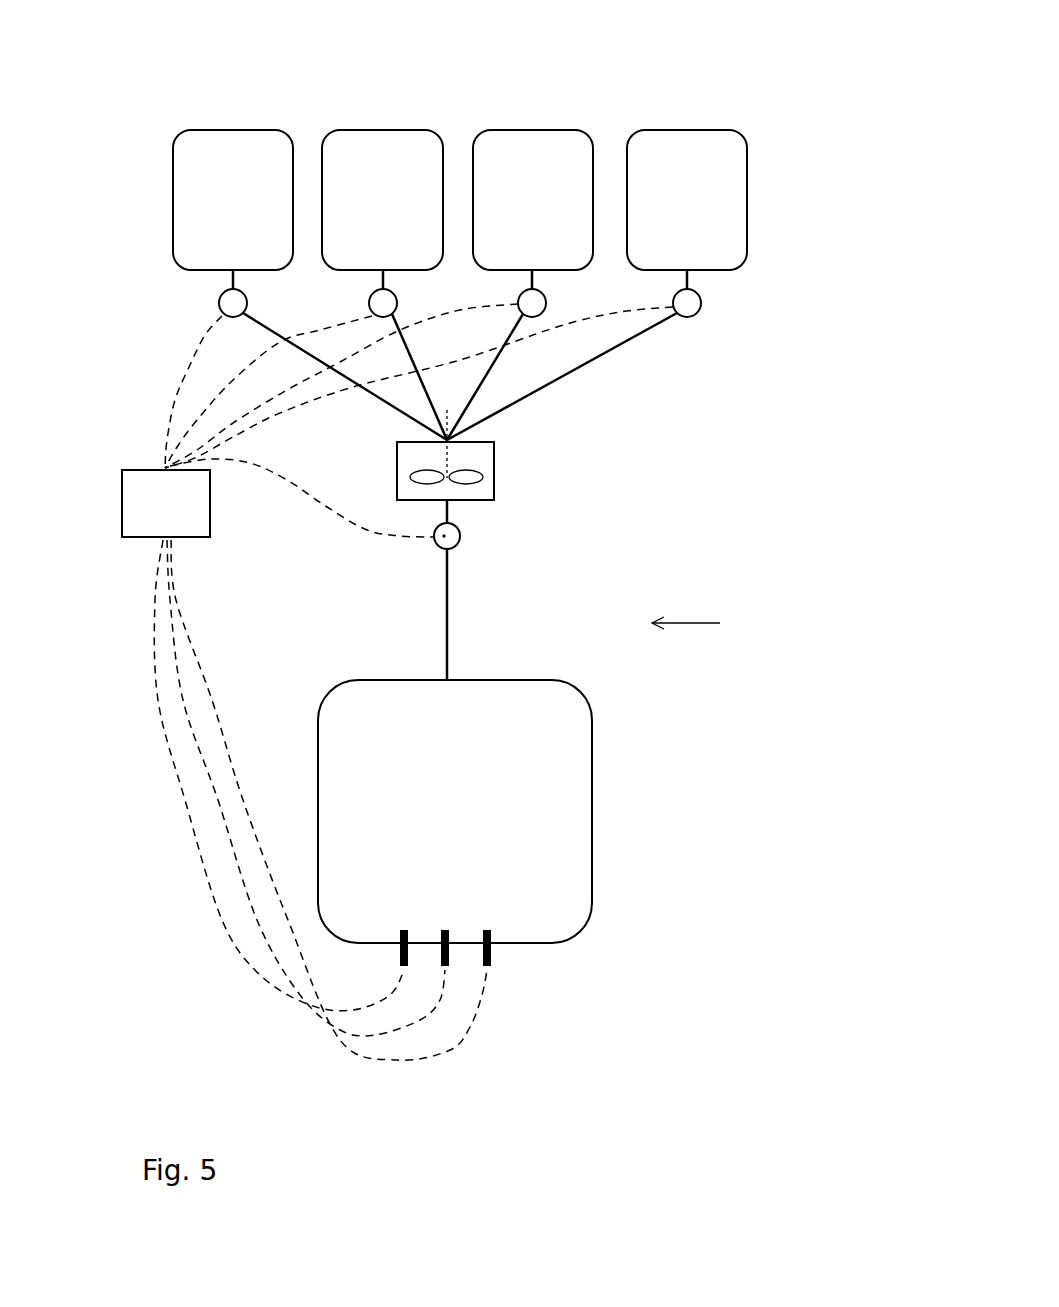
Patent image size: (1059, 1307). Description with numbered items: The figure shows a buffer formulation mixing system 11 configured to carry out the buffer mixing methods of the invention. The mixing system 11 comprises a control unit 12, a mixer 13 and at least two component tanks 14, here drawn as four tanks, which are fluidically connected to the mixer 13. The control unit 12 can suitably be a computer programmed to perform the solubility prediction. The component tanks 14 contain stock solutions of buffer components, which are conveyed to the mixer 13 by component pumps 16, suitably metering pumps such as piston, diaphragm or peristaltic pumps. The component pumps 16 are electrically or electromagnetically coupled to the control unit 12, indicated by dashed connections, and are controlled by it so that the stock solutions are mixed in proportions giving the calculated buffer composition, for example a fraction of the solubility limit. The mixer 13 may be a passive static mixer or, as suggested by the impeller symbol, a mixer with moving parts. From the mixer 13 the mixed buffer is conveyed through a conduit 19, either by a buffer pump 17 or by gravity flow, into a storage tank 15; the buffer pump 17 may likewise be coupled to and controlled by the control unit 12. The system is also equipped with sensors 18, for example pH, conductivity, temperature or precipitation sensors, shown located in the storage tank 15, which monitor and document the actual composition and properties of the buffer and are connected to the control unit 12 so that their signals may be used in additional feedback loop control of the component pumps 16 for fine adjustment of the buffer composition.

The mixing system 11 is at (711, 623).
The control unit 12 is at (121, 503).
The mixer 13 is at (495, 468).
The component tanks 14 is at (703, 128).
The storage tank 15 is at (592, 810).
The component pumps 16 is at (369, 304).
The buffer pump 17 is at (460, 533).
The sensors 18 is at (406, 930).
The conduit 19 is at (450, 597).